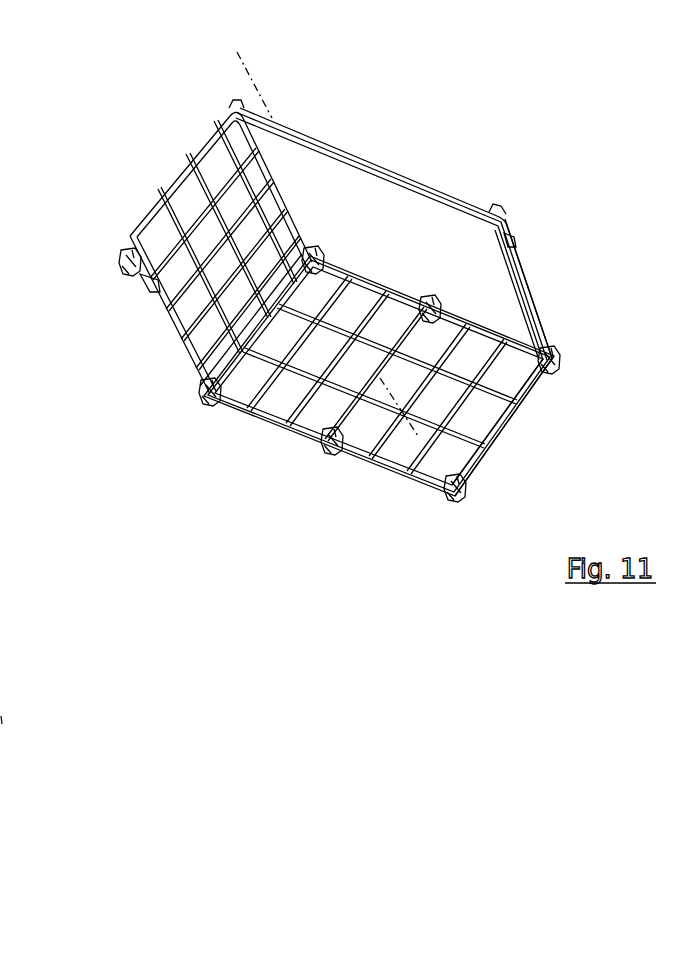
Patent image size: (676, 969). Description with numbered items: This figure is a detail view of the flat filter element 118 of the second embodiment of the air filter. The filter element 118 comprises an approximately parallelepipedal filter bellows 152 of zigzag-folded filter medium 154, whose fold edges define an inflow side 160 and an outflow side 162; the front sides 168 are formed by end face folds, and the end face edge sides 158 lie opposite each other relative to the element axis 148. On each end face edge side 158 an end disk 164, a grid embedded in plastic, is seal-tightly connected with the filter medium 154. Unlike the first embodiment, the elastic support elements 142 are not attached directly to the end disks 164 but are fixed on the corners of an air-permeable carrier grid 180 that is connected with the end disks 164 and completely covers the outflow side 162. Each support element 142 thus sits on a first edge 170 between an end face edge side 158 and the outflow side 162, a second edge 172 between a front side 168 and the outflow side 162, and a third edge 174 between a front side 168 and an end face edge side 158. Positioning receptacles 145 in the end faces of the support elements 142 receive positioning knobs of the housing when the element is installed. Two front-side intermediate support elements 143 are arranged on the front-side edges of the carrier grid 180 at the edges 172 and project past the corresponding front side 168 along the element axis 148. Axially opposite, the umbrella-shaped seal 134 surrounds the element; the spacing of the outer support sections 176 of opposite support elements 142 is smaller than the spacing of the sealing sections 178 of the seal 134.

The filter element 118 is at (176, 131).
The seal 134 is at (116, 264).
The support elements 142 is at (320, 254).
The intermediate support elements 143 is at (433, 296).
The positioning receptacles 145 is at (608, 432).
The element axis 148 is at (240, 62).
The filter bellows 152 is at (390, 200).
The filter medium 154 is at (475, 254).
The end face edge sides 158 is at (270, 162).
The inflow side 160 is at (359, 146).
The outflow side 162 is at (359, 422).
The end disks 164 is at (190, 315).
The front sides 168 is at (482, 218).
The first edge 170 is at (483, 430).
The second edge 172 is at (383, 276).
The third edge 174 is at (283, 205).
The end face edge-associated outer support sections 176 is at (300, 258).
The end face edge-associated sealing sections 178 is at (130, 268).
The carrier grid 180 is at (470, 449).